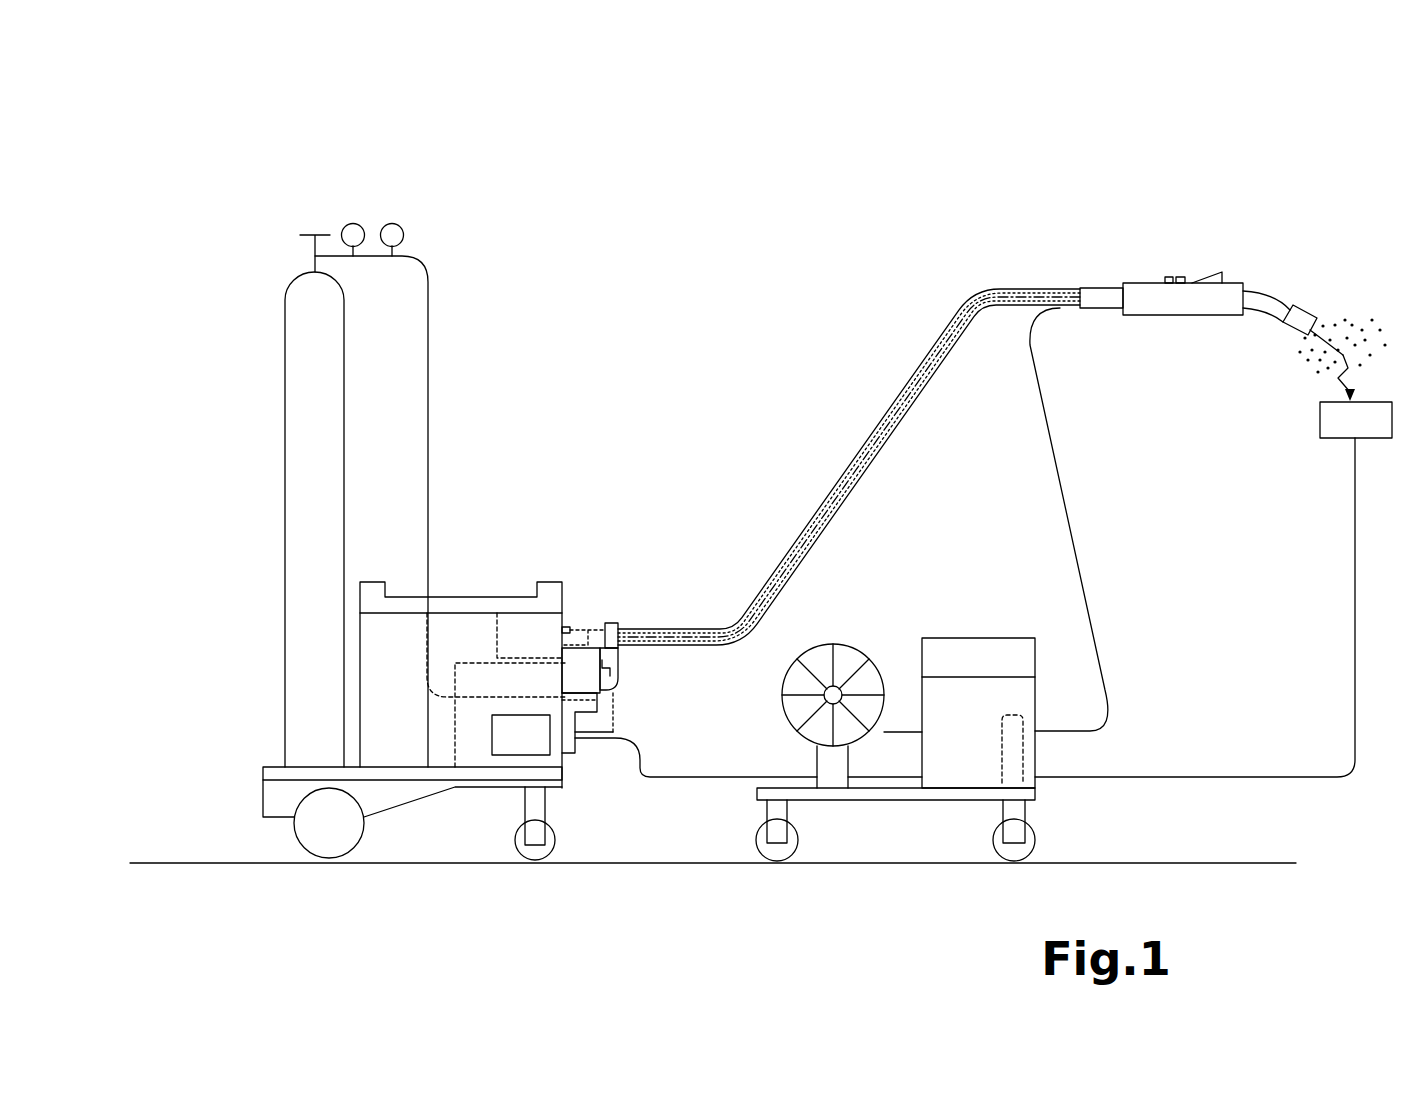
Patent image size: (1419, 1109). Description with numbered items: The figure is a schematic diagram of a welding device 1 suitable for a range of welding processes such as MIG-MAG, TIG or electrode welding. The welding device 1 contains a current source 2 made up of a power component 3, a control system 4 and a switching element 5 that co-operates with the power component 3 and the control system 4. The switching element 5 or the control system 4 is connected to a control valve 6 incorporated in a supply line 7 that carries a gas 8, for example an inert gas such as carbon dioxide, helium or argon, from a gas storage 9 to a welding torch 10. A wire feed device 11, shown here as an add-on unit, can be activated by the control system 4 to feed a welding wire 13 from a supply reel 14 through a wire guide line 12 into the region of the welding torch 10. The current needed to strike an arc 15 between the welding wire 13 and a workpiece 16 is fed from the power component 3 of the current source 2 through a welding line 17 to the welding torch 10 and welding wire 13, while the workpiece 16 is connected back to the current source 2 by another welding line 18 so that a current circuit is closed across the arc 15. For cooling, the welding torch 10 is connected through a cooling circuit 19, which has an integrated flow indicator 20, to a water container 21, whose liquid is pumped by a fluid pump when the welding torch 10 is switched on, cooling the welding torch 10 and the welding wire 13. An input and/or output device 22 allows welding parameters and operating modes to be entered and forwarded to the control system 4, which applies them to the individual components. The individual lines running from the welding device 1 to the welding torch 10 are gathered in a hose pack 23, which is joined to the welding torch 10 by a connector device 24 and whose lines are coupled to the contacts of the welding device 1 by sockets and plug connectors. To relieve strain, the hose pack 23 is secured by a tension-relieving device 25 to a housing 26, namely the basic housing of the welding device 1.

The welding device 1 is at (212, 221).
The current source 2 is at (511, 462).
The power component 3 is at (512, 742).
The control system 4 is at (452, 730).
The switching element 5 is at (575, 767).
The control valve 6 is at (573, 710).
The supply line 7 is at (1005, 304).
The gas 8 is at (1325, 298).
The gas storage 9 is at (313, 358).
The welding torch 10 is at (1233, 251).
The wire feed device 11 is at (1088, 824).
The wire guide line 12 is at (1081, 550).
The welding wire 13 is at (1332, 340).
The supply reel 14 is at (843, 658).
The arc 15 is at (1328, 385).
The workpiece 16 is at (1367, 420).
The welding line 17 is at (931, 355).
The welding line 18 is at (1357, 628).
The cooling circuit 19 is at (781, 554).
The flow indicator 20 is at (567, 628).
The water container 21 is at (520, 627).
The input and/or output device 22 is at (550, 613).
The hose pack 23 is at (677, 632).
The connector device 24 is at (1100, 298).
The tension-relieving device 25 is at (615, 632).
The housing 26 is at (620, 660).